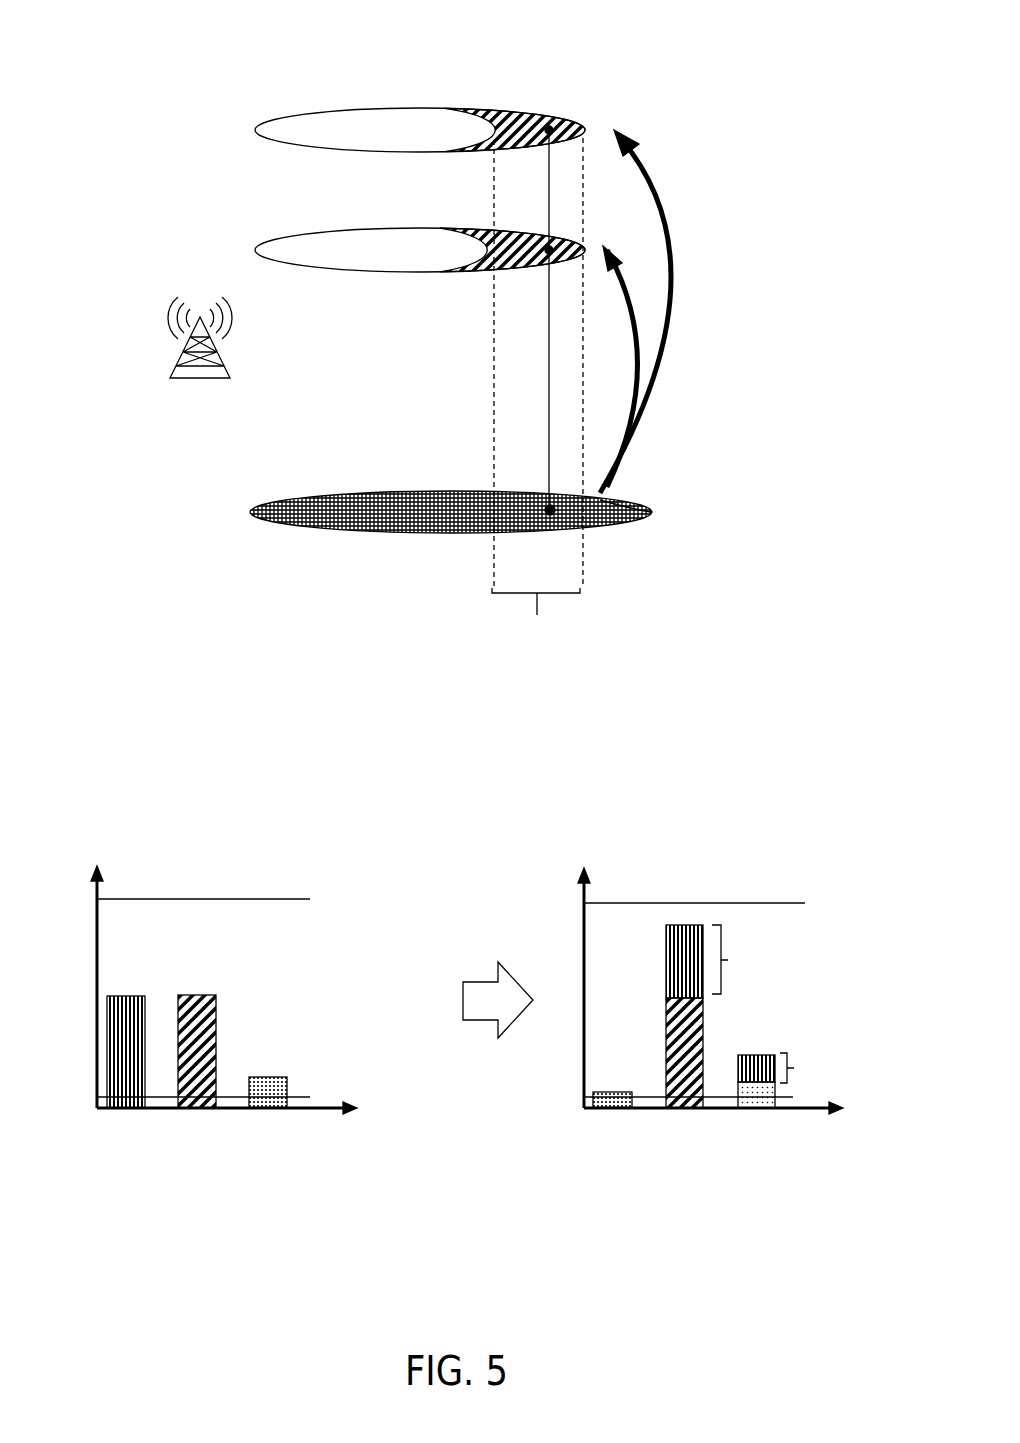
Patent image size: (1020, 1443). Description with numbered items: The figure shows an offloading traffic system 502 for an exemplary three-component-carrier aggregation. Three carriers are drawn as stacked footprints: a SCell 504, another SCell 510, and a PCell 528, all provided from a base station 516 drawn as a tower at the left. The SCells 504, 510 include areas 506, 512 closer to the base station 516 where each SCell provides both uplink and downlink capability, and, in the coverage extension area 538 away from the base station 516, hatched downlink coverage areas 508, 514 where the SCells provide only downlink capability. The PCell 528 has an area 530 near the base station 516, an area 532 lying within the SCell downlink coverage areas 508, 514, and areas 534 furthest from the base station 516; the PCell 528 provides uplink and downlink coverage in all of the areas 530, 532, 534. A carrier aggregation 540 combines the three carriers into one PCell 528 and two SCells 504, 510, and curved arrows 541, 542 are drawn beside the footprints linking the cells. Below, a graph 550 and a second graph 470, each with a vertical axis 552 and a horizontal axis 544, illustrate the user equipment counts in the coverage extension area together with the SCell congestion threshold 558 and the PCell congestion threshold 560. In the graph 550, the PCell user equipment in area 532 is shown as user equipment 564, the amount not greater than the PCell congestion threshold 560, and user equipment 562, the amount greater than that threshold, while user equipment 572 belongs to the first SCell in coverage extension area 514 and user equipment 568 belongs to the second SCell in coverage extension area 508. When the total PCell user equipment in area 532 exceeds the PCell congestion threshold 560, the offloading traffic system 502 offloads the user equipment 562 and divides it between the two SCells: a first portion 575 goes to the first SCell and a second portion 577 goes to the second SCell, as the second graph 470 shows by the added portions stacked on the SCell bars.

The offloading traffic system 502 is at (388, 45).
The SCell 504 is at (392, 107).
The area 506 is at (298, 110).
The downlink coverage area 508 is at (518, 108).
The another SCell 510 is at (382, 272).
The area 512 is at (322, 270).
The downlink coverage area 514 is at (508, 273).
The base station 516 is at (162, 313).
The PCell 528 is at (421, 512).
The area 530 is at (358, 527).
The area 532 is at (522, 518).
The areas 534 is at (638, 520).
The coverage extension area 538 is at (577, 593).
The carrier aggregation 540 is at (552, 207).
The second beam steering direction 541 is at (637, 320).
The first beam steering direction 542 is at (673, 277).
The graph 550 is at (278, 843).
The adjusted resource allocation chart 470 is at (698, 845).
The resource axis 552 is at (97, 916).
The SCell congestion threshold 558 is at (310, 899).
The PCell congestion threshold 560 is at (310, 1097).
The user equipment 562 is at (107, 1040).
The user equipment 564 is at (97, 1112).
The user equipment 568 is at (283, 1077).
The user equipment 572 is at (195, 1108).
The beam axis 544 is at (313, 1112).
The first portion 575 is at (722, 961).
The second portion 577 is at (772, 1055).